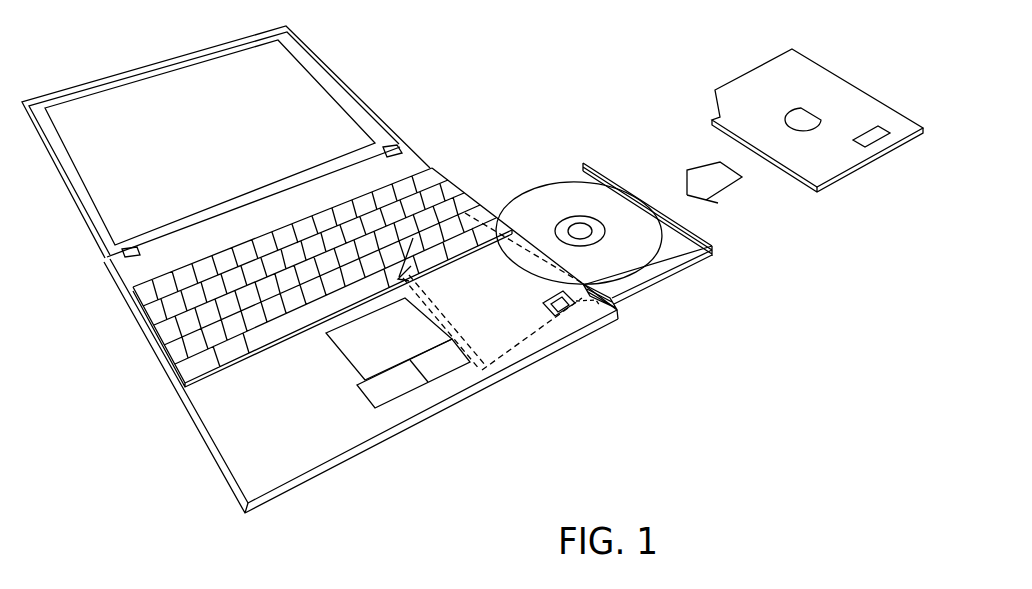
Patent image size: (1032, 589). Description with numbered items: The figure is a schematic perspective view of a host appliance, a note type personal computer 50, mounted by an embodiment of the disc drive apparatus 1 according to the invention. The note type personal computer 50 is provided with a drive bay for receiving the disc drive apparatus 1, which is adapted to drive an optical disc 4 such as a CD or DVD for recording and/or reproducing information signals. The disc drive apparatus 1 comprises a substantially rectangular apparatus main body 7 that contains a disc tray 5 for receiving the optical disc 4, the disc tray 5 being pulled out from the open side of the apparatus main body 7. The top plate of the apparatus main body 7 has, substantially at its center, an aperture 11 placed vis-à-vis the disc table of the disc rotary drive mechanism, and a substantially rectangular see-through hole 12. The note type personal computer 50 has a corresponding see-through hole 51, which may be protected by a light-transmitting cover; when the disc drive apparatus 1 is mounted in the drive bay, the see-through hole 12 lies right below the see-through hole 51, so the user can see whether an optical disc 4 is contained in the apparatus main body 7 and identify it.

The disc drive apparatus 1 is at (660, 227).
The optical disc 4 is at (547, 202).
The disc tray 5 is at (678, 263).
The apparatus main body 7 is at (797, 167).
The aperture 11 is at (803, 112).
The see-through hole 12 is at (873, 138).
The note type personal computer 50 is at (432, 167).
The see-through hole 51 is at (568, 306).